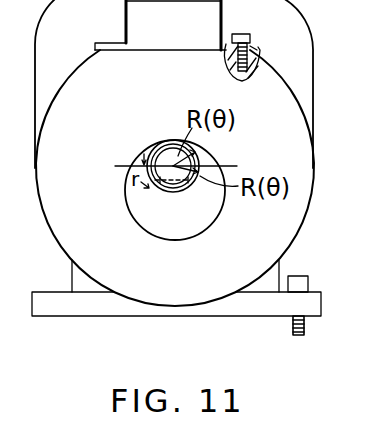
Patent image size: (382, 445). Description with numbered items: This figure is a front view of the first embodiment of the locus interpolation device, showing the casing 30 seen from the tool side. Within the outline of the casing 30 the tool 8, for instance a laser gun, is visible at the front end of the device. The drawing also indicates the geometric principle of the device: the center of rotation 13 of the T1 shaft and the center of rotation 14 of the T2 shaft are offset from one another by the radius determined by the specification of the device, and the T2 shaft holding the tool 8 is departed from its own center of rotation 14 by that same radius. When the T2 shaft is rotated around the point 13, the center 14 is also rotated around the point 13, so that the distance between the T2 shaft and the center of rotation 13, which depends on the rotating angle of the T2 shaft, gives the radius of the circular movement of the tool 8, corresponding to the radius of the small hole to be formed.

The casing 30 is at (301, 53).
The tool 8 is at (216, 211).
The center of rotation of the T1 shaft 13 is at (163, 143).
The center of rotation of the T2 shaft 14 is at (167, 190).